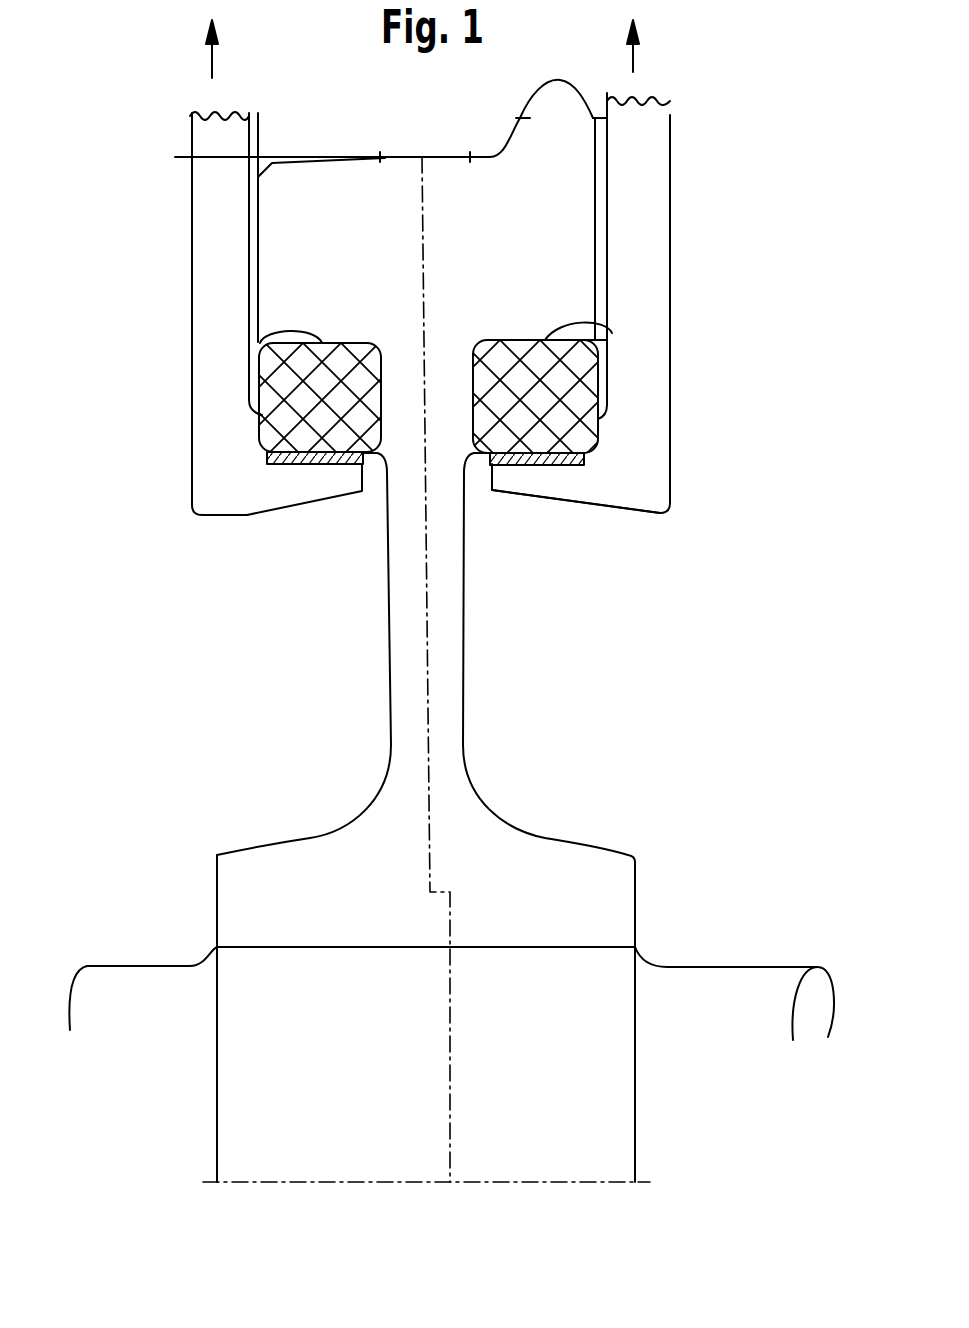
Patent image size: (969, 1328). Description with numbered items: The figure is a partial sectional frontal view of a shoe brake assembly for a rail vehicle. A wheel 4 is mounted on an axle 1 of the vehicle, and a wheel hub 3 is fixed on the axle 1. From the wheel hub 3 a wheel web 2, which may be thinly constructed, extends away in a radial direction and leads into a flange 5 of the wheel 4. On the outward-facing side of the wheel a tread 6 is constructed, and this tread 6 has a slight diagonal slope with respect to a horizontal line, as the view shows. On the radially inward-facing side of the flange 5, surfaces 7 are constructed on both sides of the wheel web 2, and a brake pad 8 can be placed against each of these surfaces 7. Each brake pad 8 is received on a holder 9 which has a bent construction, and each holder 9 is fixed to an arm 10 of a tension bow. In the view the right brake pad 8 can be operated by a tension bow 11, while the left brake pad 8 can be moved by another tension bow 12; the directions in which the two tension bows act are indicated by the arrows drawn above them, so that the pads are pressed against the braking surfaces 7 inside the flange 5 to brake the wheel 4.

The axle 1 is at (702, 983).
The wheel web 2 is at (450, 667).
The wheel hub 3 is at (558, 887).
The wheel 4 is at (327, 193).
The flange 5 is at (567, 125).
The tread 6 is at (410, 157).
The surfaces 7 is at (260, 350).
The brake pad 8 is at (268, 422).
The holder 9 is at (280, 463).
The arm 10 is at (627, 497).
The tension bow 11 is at (648, 270).
The another tension bow 12 is at (220, 280).